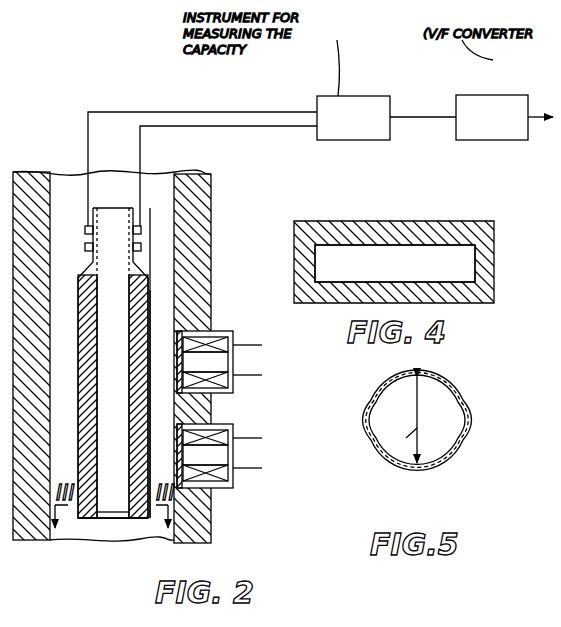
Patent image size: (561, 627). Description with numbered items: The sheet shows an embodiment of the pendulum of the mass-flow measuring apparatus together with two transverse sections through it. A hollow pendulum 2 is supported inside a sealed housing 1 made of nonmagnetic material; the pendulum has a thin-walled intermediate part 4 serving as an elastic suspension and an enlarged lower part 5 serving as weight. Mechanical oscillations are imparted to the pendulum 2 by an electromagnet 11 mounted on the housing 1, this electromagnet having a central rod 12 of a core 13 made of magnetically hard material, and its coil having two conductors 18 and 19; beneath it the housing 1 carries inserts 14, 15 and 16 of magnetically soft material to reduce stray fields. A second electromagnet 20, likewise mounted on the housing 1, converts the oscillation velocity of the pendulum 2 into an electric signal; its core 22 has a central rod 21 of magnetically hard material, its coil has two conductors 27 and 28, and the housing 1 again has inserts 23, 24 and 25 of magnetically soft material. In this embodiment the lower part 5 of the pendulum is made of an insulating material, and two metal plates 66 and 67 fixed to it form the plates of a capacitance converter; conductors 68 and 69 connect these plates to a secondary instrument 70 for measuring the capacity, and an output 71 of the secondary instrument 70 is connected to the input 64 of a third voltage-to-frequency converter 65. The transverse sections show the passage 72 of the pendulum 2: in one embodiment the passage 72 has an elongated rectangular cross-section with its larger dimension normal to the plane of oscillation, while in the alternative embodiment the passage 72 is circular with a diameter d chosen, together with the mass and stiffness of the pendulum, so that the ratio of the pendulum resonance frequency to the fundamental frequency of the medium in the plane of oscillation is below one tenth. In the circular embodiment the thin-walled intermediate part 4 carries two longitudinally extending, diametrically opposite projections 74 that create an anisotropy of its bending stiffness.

In FIG. 2, the sealed housing 1 is at (203, 200).
In FIG. 2, the hollow pendulum 2 is at (90, 440).
In FIG. 4, the hollow pendulum 2 is at (482, 275).
In FIG. 5, the hollow pendulum 2 is at (466, 438).
In FIG. 2, the thin-walled intermediate part 4 is at (86, 228).
In FIG. 2, the enlarged lower part 5 is at (128, 520).
In FIG. 2, the electromagnet 11 is at (238, 488).
In FIG. 2, the central rod 12 is at (208, 440).
In FIG. 2, the core 13 is at (240, 466).
In FIG. 2, the insert 14 is at (185, 426).
In FIG. 2, the insert 15 is at (185, 460).
In FIG. 2, the insert 16 is at (200, 520).
In FIG. 2, the conductor 18 is at (245, 476).
In FIG. 2, the conductor 19 is at (233, 448).
In FIG. 2, the electromagnet 20 is at (238, 395).
In FIG. 2, the central rod 21 is at (210, 336).
In FIG. 2, the core 22 is at (240, 372).
In FIG. 2, the insert 23 is at (212, 310).
In FIG. 2, the insert 24 is at (180, 360).
In FIG. 2, the insert 25 is at (185, 390).
In FIG. 2, the conductor 27 is at (233, 345).
In FIG. 2, the conductor 28 is at (245, 378).
In FIG. 2, the input 64 is at (456, 120).
In FIG. 2, the third voltage-to-frequency converter 65 is at (495, 95).
In FIG. 2, the metal plate 66 is at (88, 384).
In FIG. 2, the metal plate 67 is at (152, 332).
In FIG. 2, the conductor 68 is at (84, 182).
In FIG. 2, the conductor 69 is at (142, 182).
In FIG. 2, the secondary instrument 70 is at (366, 140).
In FIG. 2, the output 71 is at (410, 117).
In FIG. 2, the passage 72 is at (105, 520).
In FIG. 4, the passage 72 is at (446, 258).
In FIG. 5, the passage 72 is at (432, 445).
In FIG. 5, the projections 74 is at (364, 410).